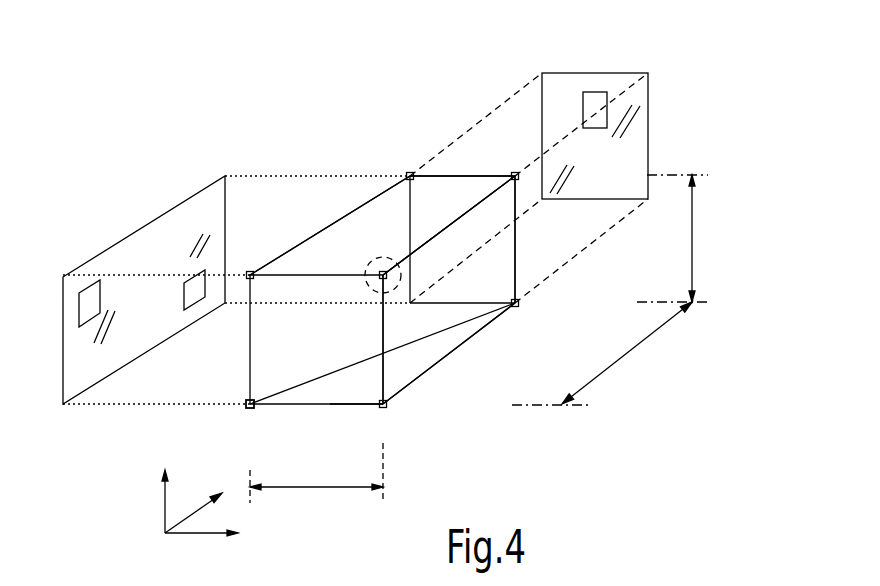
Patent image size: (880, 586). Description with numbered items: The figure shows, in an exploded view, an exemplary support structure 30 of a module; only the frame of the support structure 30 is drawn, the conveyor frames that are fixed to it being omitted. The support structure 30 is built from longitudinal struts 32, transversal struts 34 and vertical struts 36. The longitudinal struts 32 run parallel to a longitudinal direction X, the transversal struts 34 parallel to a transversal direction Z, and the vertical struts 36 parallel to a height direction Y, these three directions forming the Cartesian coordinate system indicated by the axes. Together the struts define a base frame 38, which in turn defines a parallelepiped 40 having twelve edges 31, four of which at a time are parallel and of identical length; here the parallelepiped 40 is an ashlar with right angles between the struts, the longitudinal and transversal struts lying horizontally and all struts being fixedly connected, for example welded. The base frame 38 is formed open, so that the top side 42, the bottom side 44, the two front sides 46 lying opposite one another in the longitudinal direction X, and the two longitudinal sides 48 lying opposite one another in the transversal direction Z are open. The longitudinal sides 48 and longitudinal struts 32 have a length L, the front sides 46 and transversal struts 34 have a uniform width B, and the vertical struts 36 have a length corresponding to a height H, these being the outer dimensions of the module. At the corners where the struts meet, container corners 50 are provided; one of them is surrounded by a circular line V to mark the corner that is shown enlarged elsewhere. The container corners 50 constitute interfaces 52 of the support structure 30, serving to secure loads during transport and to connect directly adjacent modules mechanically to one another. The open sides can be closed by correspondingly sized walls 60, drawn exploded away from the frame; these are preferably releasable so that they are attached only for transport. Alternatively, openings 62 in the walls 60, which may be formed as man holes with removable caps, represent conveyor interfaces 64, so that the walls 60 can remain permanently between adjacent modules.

The support structure 30 is at (350, 122).
The edges 31 is at (238, 360).
The longitudinal struts 32 is at (438, 237).
The transversal struts 34 is at (462, 176).
The vertical struts 36 is at (382, 357).
The base frame 38 is at (348, 419).
The parallelepiped 40 is at (436, 345).
The top side 42 is at (336, 233).
The bottom side 44 is at (406, 379).
The front sides 46 is at (280, 327).
The longitudinal sides 48 is at (377, 236).
The container corners 50 is at (410, 176).
The interfaces 52 is at (239, 420).
The walls 60 is at (152, 220).
The openings 62 is at (83, 327).
The conveyor interfaces 64 is at (81, 306).
The circular line V is at (377, 290).
The height H is at (692, 230).
The length L is at (633, 350).
The width B is at (315, 487).
The longitudinal direction X is at (200, 513).
The height direction Y is at (168, 486).
The transversal direction Z is at (214, 528).